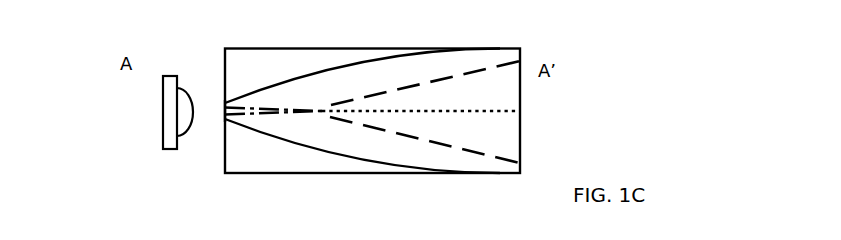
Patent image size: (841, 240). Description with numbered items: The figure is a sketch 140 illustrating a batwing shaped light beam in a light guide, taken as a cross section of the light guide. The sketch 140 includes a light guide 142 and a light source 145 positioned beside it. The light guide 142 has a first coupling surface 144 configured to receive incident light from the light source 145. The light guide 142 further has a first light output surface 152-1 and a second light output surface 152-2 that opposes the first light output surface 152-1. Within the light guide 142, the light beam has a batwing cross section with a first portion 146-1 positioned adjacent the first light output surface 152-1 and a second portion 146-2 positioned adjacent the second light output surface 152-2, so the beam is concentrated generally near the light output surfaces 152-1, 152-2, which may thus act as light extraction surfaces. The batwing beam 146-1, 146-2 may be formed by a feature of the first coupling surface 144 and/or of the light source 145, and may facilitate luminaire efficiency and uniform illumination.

The sketch 140 is at (76, 57).
The light guide 142 is at (281, 192).
The first coupling surface 144 is at (225, 148).
The light source 145 is at (145, 111).
The first portion of the batwing 146-1 is at (409, 62).
The second portion of the batwing 146-2 is at (419, 162).
The first light output surface 152-1 is at (303, 48).
The second light output surface 152-2 is at (318, 173).